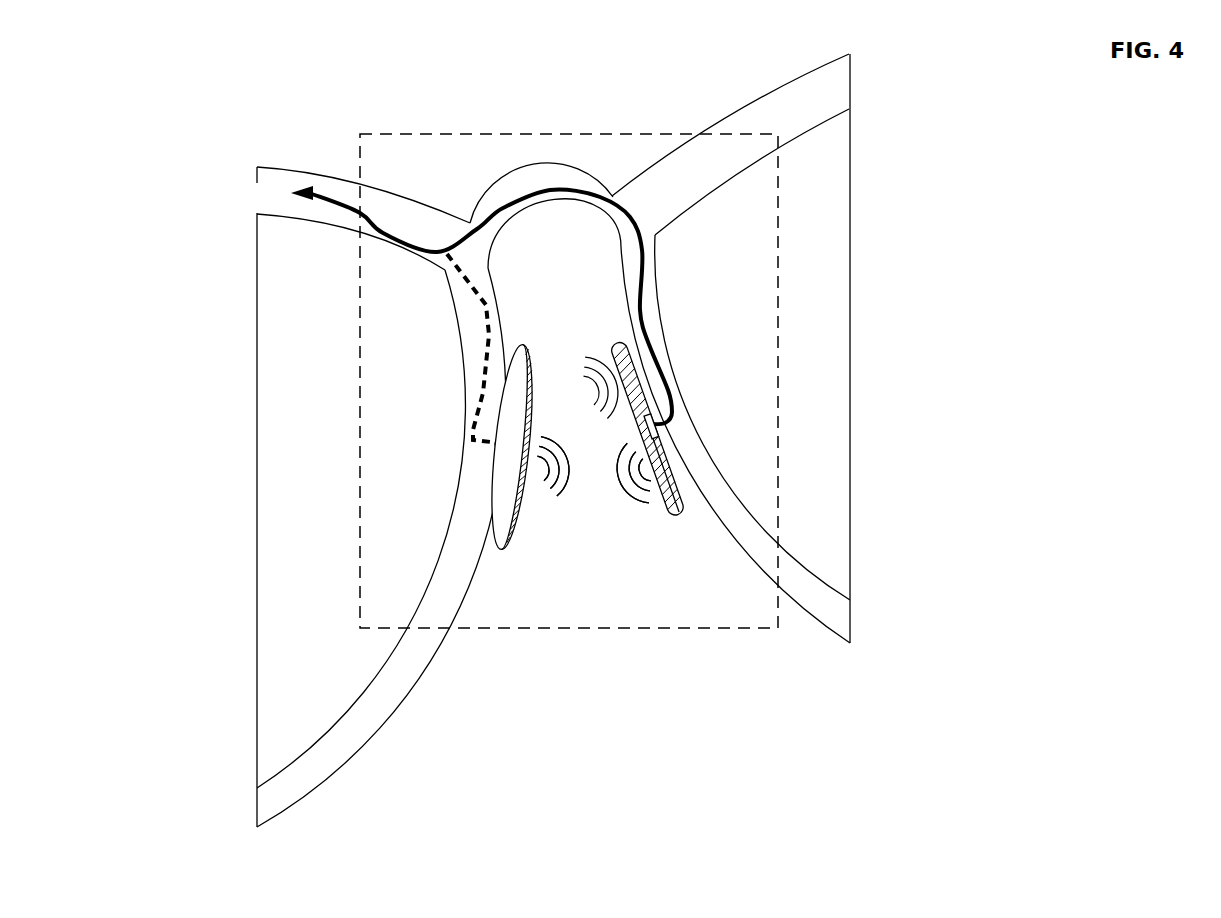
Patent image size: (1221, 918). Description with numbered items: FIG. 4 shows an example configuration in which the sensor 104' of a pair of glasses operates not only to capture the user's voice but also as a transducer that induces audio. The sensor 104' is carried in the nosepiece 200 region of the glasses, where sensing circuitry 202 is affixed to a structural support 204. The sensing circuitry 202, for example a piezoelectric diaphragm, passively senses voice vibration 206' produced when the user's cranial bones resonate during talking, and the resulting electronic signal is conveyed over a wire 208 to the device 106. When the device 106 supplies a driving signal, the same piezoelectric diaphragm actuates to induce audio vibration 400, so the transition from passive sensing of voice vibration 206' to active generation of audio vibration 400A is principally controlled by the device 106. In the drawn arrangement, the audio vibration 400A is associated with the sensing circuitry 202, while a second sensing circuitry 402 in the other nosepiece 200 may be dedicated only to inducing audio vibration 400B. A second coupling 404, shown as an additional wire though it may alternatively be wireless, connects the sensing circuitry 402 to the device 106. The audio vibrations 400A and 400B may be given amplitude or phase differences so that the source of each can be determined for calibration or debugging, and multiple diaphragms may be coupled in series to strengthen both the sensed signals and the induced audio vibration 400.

The sensor 104' is at (576, 440).
The device 106 is at (246, 193).
The nosepiece 200 is at (498, 540).
The sensing circuitry 202 is at (673, 518).
The structural support 204 is at (680, 518).
The voice vibration 206' is at (593, 385).
The wire 208 is at (644, 251).
The audio vibration 400 is at (602, 481).
The audio vibration 400A is at (653, 528).
The audio vibration 400B is at (578, 531).
The sensing circuitry 402 is at (515, 538).
The second coupling 404 is at (470, 410).